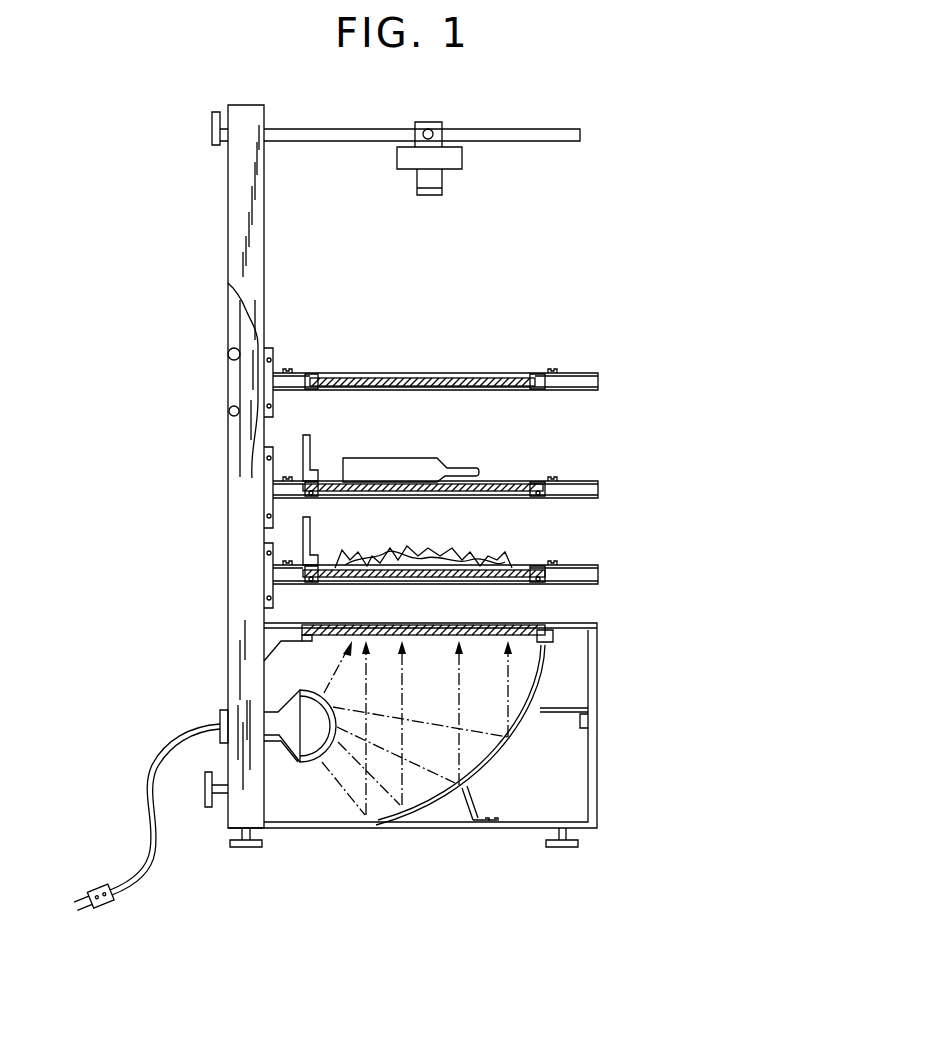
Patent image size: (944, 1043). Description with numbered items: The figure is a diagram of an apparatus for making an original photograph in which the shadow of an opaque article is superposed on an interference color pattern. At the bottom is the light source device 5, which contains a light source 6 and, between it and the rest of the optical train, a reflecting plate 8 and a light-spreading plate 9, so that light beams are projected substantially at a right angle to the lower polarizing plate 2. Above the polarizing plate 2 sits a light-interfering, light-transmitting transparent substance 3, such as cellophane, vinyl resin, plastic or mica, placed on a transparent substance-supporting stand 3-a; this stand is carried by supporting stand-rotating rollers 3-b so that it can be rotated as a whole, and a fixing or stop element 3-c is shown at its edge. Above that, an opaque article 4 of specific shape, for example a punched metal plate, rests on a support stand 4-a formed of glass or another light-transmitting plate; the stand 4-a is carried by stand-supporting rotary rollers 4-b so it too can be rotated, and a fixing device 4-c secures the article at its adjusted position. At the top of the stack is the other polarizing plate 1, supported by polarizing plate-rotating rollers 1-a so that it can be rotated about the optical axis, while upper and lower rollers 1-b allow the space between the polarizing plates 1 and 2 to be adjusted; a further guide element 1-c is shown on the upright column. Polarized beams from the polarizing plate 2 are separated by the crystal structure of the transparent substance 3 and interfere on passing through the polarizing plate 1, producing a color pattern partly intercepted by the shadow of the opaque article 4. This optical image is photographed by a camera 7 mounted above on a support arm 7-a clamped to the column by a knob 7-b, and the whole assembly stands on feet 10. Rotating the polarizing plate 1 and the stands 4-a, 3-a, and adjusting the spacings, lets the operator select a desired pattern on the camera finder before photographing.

The polarizing plate 1 is at (508, 372).
The polarizing plate-rotating rollers 1-a is at (543, 389).
The upper and lower rollers 1-b is at (234, 413).
The upper guide roller 1-c is at (234, 380).
The polarizing plate 2 is at (548, 626).
The transparent substance 3 is at (505, 558).
The transparent substance-supporting stand 3-a is at (555, 566).
The supporting stand-rotating rollers 3-b is at (540, 584).
The food tray stop 3-c is at (305, 530).
The opaque article 4 is at (417, 470).
The support stand 4-a is at (520, 482).
The stand-supporting rotary rollers 4-b is at (313, 496).
The fixing device 4-c is at (318, 456).
The light source device 5 is at (597, 790).
The light source 6 is at (300, 764).
The camera 7 is at (460, 158).
The support arm 7-a is at (556, 128).
The clamp knob 7-b is at (212, 136).
The reflecting plate 8 is at (442, 830).
The light-spreading plate 9 is at (612, 662).
The feet 10 is at (560, 848).